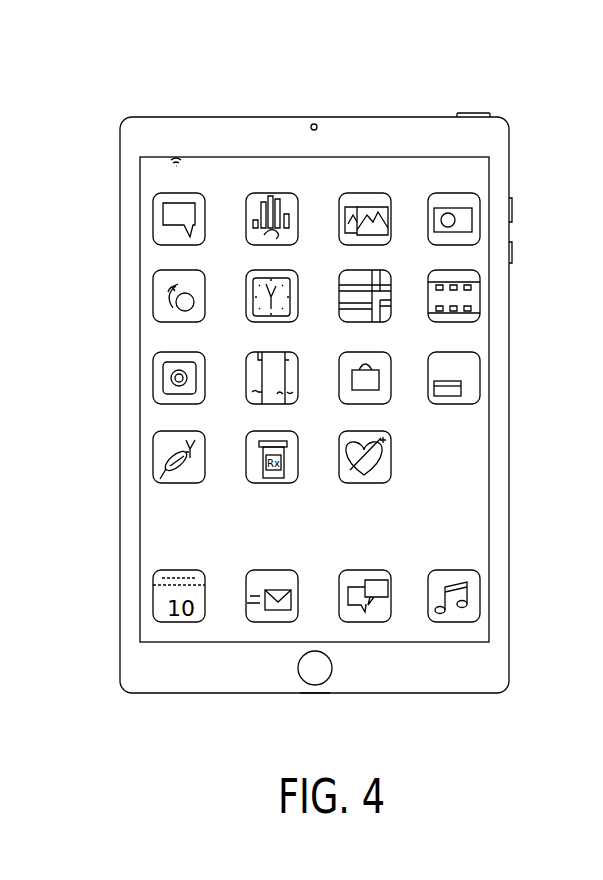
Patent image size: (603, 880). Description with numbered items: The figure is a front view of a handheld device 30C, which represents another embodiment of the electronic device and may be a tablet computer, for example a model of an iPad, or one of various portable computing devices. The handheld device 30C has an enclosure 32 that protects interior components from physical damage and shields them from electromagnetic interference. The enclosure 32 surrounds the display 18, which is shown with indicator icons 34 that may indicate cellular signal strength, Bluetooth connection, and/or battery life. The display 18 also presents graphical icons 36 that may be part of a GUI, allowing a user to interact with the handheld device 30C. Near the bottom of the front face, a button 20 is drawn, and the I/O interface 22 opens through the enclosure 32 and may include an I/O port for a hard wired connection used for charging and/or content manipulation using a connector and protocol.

The handheld device 30C is at (128, 80).
The enclosure 32 is at (447, 117).
The indicator icons 34 is at (178, 157).
The graphical icons 36 is at (478, 378).
The display 18 is at (492, 455).
The home button 20 is at (333, 668).
The I/O interface 22 is at (315, 694).